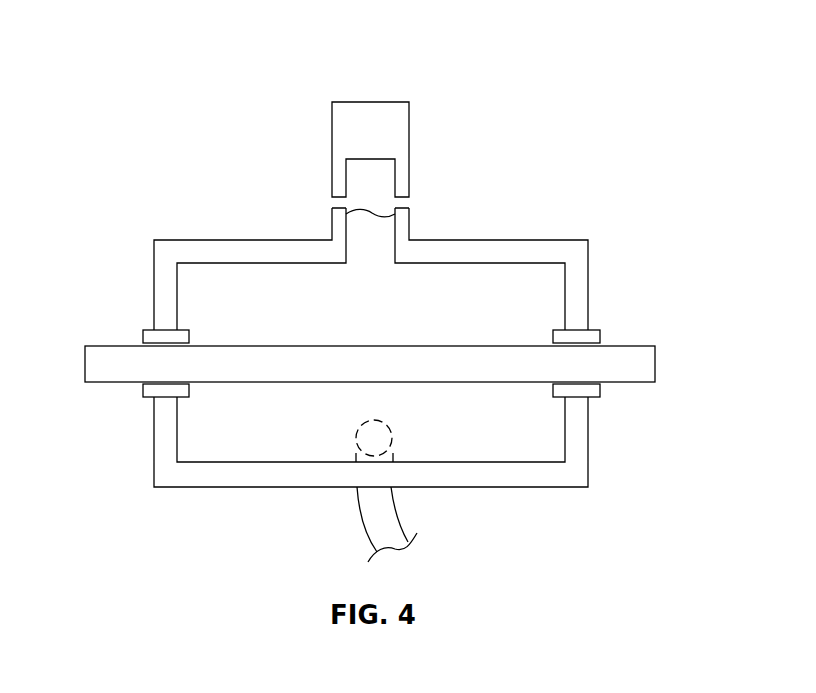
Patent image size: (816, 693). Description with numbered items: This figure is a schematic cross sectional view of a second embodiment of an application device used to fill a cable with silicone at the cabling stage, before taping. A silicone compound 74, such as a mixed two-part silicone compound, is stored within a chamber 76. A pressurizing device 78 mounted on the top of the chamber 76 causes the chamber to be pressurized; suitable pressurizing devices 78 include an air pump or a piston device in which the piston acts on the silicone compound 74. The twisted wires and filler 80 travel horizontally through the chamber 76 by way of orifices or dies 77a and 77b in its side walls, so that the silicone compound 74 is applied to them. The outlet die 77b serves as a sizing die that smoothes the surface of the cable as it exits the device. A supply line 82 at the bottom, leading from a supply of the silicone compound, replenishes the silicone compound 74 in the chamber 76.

The silicone compound 74 is at (378, 216).
The chamber 76 is at (547, 240).
The orifice or die 77a is at (143, 390).
The sizing die 77b is at (600, 390).
The pressurizing device 78 is at (383, 102).
The twisted wires and filler 80 is at (622, 346).
The supply line 82 is at (370, 512).